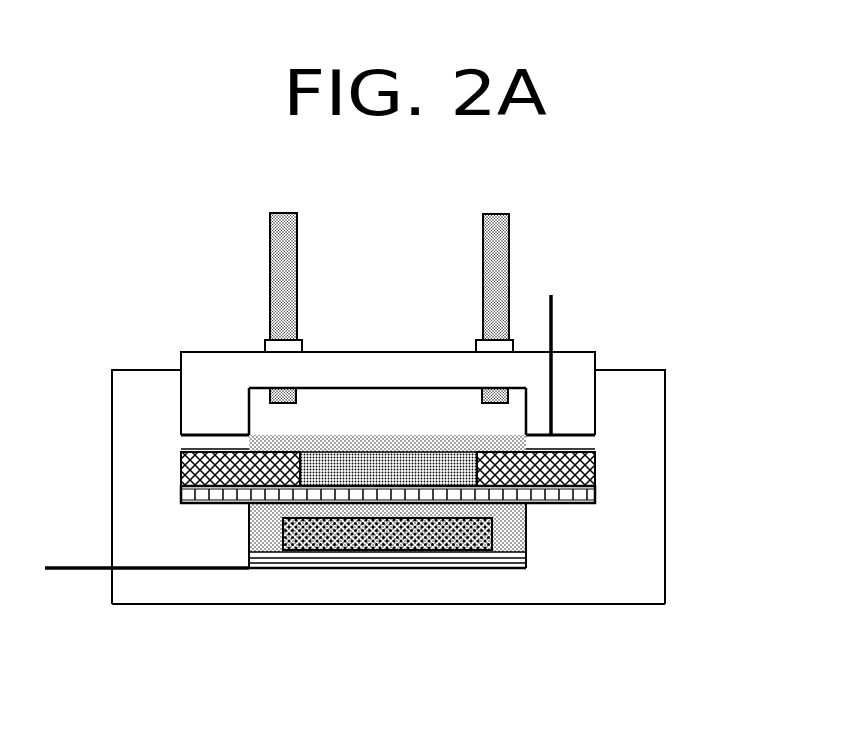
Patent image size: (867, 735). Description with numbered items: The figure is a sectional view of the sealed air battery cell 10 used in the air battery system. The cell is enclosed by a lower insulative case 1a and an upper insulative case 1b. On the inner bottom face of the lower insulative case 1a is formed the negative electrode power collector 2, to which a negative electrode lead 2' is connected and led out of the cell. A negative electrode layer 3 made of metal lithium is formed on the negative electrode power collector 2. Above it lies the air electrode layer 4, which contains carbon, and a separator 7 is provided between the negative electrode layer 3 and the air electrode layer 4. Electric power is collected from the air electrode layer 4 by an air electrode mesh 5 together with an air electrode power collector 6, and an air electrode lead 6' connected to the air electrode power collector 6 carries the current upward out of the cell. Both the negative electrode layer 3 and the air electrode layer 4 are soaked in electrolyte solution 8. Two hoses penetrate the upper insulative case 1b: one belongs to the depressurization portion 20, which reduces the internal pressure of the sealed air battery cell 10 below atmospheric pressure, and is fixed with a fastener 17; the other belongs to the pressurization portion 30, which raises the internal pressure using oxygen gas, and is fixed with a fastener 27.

The sealed air battery cell 10 is at (777, 353).
The lower insulative case 1a is at (630, 591).
The upper insulative case 1b is at (207, 370).
The negative electrode power collector 2 is at (482, 548).
The negative electrode lead 2' is at (139, 597).
The negative electrode layer 3 is at (467, 533).
The air electrode layer 4 is at (380, 457).
The air electrode mesh 5 is at (187, 467).
The air electrode power collector 6 is at (390, 434).
The air electrode lead 6' is at (593, 365).
The separator 7 is at (590, 493).
The electrolyte solution 8 is at (428, 445).
The fastener 17 is at (262, 345).
The fastener 27 is at (478, 345).
The depressurization portion 20 is at (282, 237).
The pressurization portion 30 is at (500, 232).